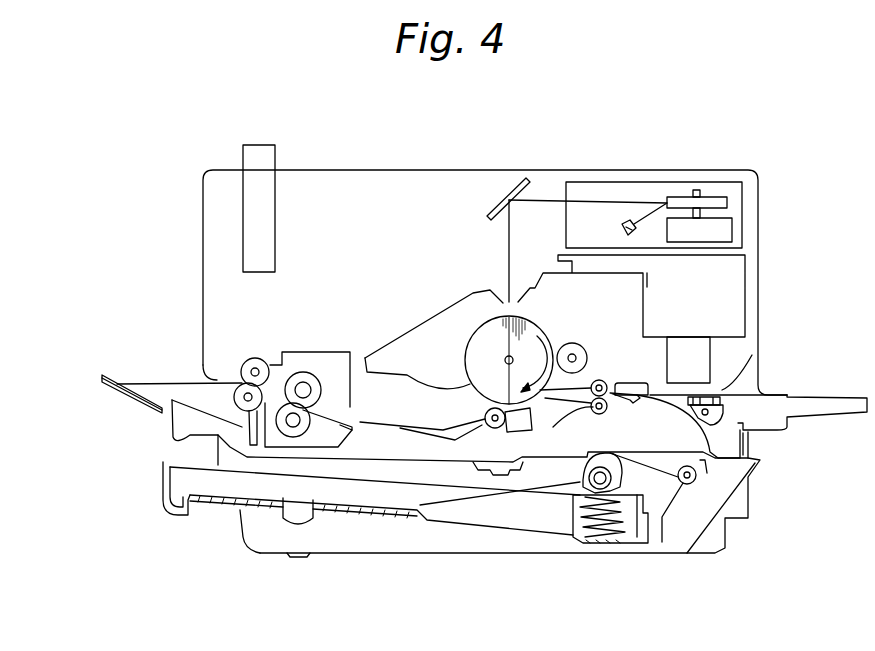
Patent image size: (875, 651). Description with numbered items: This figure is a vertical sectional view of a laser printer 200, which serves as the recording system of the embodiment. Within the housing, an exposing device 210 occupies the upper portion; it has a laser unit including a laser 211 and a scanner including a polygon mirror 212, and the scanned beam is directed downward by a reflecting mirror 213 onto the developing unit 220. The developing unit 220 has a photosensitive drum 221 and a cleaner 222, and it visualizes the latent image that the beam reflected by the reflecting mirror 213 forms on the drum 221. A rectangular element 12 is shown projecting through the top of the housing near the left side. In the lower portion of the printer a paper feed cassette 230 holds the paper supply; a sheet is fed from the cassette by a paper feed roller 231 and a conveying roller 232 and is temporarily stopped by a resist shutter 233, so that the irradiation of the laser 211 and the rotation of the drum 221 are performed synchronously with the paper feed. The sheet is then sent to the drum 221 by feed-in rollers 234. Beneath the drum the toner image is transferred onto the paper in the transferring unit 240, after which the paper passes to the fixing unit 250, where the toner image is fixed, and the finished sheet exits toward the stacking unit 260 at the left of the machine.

The laser printer 200 is at (676, 82).
The cartridge 12 is at (275, 152).
The exposing device 210 is at (742, 202).
The laser 211 is at (628, 213).
The polygon mirror 212 is at (705, 205).
The reflecting mirror 213 is at (515, 186).
The developing unit 220 is at (620, 308).
The photosensitive drum 221 is at (480, 323).
The cleaner 222 is at (403, 340).
The paper feed cassette 230 is at (163, 492).
The paper feed roller 231 is at (583, 478).
The conveying roller 232 is at (688, 487).
The resist shutter 233 is at (627, 398).
The feed-in rollers 234 is at (590, 402).
The transferring unit 240 is at (517, 425).
The fixing unit 250 is at (283, 352).
The stacking unit 260 is at (140, 383).